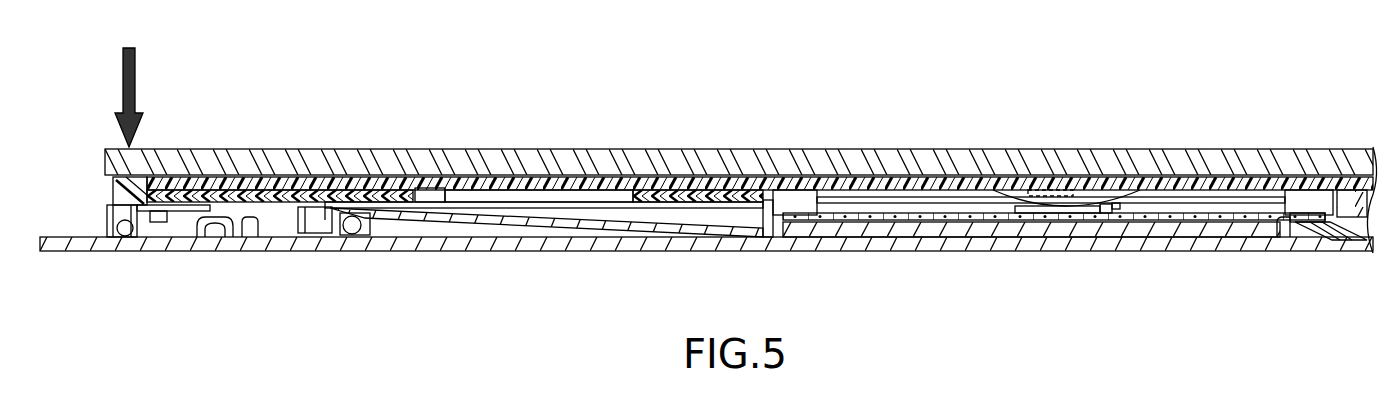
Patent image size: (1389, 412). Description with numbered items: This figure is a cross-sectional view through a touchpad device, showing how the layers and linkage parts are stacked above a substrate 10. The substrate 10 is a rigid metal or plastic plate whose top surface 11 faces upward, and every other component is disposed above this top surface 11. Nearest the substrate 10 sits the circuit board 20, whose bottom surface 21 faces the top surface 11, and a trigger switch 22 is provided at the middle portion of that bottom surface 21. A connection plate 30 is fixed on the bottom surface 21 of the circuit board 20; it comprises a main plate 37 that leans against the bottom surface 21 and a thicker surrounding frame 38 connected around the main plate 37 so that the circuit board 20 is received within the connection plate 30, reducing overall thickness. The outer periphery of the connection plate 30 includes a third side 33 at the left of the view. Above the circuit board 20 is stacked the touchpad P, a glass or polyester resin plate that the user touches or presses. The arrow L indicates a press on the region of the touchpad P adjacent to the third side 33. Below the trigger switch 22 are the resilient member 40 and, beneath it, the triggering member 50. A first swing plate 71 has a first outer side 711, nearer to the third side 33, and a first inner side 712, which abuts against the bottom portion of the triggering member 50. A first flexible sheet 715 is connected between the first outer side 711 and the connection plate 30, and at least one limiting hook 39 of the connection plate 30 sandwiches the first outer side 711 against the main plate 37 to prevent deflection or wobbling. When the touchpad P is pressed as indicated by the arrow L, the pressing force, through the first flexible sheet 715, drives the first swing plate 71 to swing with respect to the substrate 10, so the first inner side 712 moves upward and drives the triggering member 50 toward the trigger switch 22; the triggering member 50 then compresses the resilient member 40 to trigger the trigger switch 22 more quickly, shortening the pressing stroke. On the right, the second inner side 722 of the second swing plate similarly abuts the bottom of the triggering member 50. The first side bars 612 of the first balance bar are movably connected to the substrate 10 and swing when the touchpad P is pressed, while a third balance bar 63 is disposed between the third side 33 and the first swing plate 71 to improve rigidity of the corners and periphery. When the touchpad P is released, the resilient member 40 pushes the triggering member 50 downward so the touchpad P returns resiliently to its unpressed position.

The substrate 10 is at (83, 252).
The top surface 11 is at (62, 230).
The first side bars 612 is at (128, 252).
The third balance bar 63 is at (208, 252).
The first flexible sheet 715 is at (272, 252).
The first outer side 711 is at (340, 236).
The first swing plate 71 is at (458, 222).
The first inner side 712 is at (770, 252).
The third side 33 is at (112, 190).
The surrounding frame 38 is at (145, 185).
The main plate 37 is at (213, 195).
The connection plate 30 is at (238, 100).
The limiting hook 39 is at (315, 207).
The touchpad P is at (1006, 150).
The trigger switch 22 is at (1047, 190).
The resilient member 40 is at (1088, 192).
The circuit board 20 is at (1075, 201).
The bottom surface 21 is at (1128, 203).
The triggering member 50 is at (1068, 214).
The second inner side 722 is at (1322, 242).
The arrow L is at (123, 77).